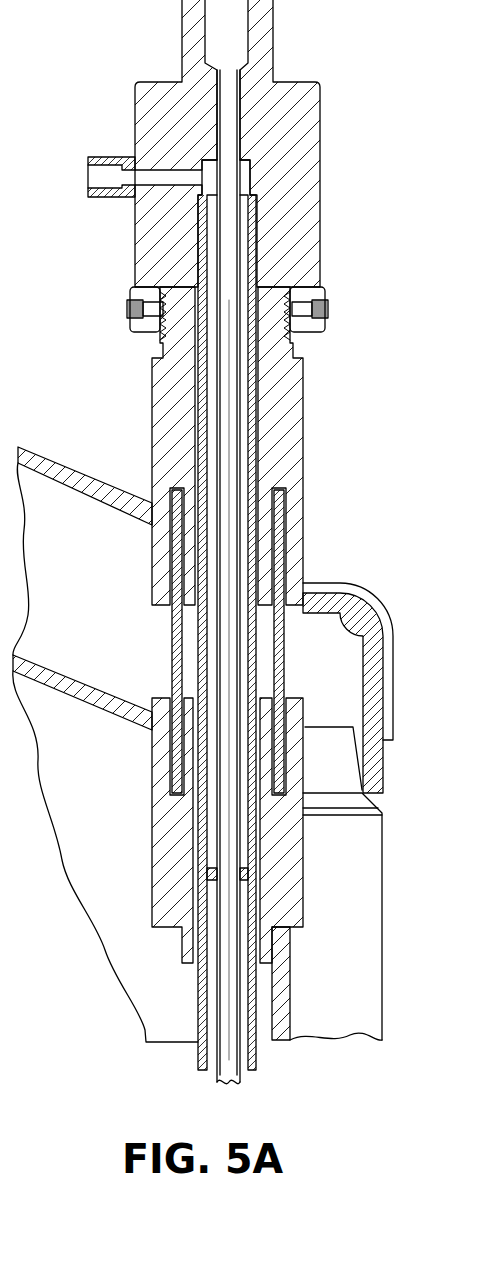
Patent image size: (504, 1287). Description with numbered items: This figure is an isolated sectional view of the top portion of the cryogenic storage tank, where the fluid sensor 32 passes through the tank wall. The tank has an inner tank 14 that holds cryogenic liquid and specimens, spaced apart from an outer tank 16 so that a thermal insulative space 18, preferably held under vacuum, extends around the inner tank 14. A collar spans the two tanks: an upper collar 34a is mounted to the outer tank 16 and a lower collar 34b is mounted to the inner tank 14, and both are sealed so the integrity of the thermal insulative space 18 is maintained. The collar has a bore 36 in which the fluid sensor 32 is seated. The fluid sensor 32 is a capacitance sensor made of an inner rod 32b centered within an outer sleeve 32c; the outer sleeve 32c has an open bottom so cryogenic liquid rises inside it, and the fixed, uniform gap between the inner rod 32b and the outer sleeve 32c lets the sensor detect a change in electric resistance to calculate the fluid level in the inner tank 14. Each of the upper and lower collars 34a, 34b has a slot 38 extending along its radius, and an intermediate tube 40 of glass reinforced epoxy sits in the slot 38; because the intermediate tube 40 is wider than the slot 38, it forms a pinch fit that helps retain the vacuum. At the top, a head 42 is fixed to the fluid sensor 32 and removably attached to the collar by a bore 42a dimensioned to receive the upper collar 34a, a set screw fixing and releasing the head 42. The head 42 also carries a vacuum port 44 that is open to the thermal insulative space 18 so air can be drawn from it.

The inner tank 14 is at (290, 962).
The outer tank 16 is at (383, 885).
The thermal insulative space 18 is at (103, 615).
The fluid sensor 32 is at (256, 212).
The inner rod 32b is at (305, 624).
The outer sleeve 32c is at (310, 650).
The upper collar 34a is at (301, 540).
The lower collar 34b is at (311, 843).
The bore 36 is at (262, 413).
The slot 38 is at (278, 496).
The intermediate tube 40 is at (283, 672).
The head 42 is at (321, 130).
The bore 42a is at (310, 290).
The vacuum port 44 is at (142, 158).